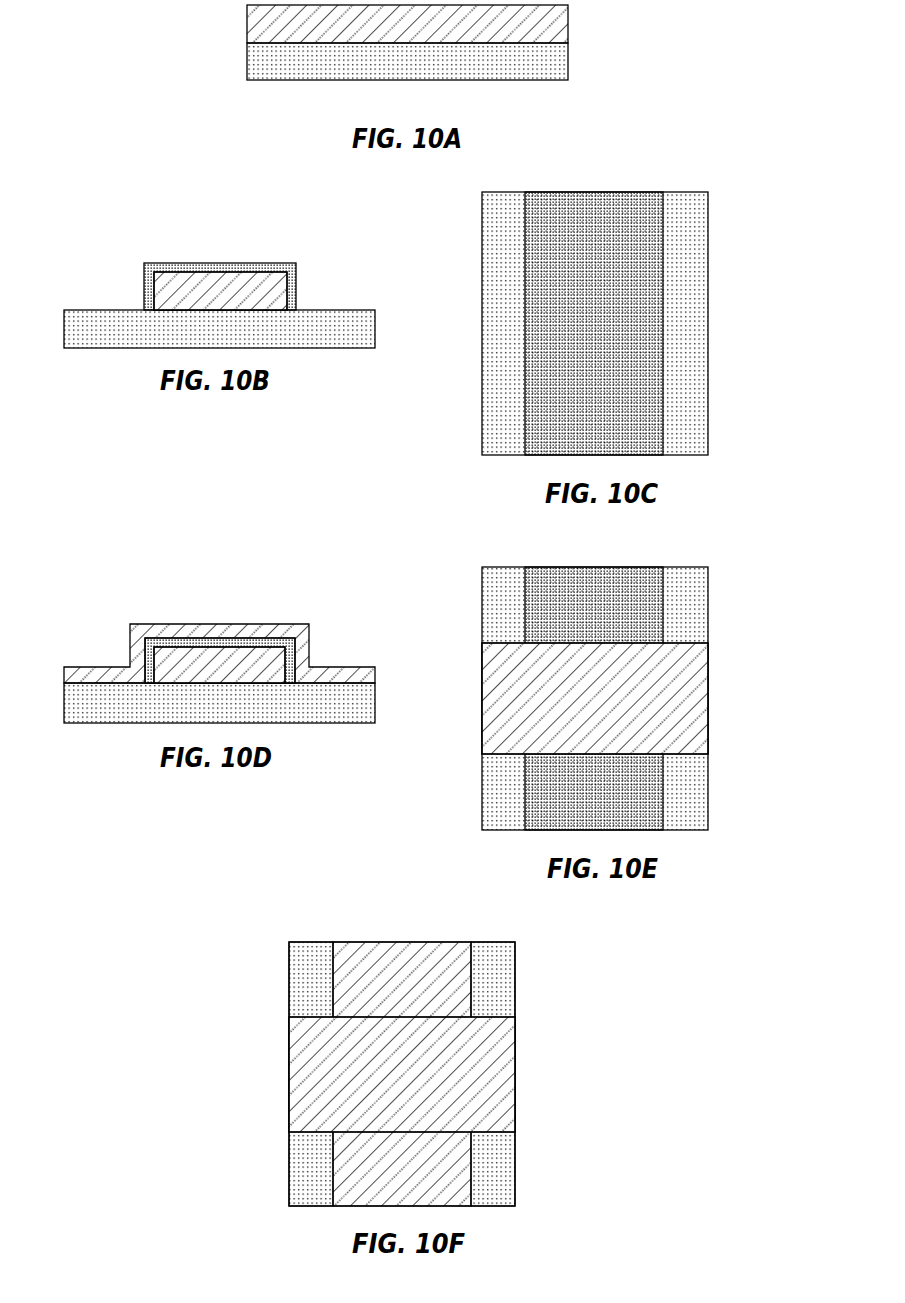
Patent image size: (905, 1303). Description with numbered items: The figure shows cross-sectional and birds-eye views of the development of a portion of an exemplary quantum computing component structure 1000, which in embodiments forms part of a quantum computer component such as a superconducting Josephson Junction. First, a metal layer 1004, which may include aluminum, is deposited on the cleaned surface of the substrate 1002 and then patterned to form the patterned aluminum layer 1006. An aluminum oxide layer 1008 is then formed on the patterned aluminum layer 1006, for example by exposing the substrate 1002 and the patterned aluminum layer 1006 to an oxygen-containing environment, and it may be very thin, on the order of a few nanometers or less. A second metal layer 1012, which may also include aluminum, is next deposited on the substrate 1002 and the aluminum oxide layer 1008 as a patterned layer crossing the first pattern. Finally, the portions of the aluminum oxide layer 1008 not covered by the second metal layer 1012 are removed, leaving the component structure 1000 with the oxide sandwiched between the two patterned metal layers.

In FIG. 10F, the quantum computing component structure 1000 is at (328, 902).
In FIG. 10A, the substrate 1002 is at (568, 62).
In FIG. 10B, the substrate 1002 is at (337, 310).
In FIG. 10C, the substrate 1002 is at (692, 310).
In FIG. 10D, the substrate 1002 is at (219, 703).
In FIG. 10E, the substrate 1002 is at (595, 698).
In FIG. 10F, the substrate 1002 is at (505, 985).
In FIG. 10A, the metal layer 1004 is at (568, 24).
In FIG. 10B, the patterned aluminum layer 1006 is at (280, 263).
In FIG. 10D, the patterned aluminum layer 1006 is at (219, 665).
In FIG. 10F, the patterned aluminum layer 1006 is at (393, 952).
In FIG. 10B, the aluminum oxide layer 1008 is at (203, 263).
In FIG. 10C, the aluminum oxide layer 1008 is at (598, 208).
In FIG. 10D, the aluminum oxide layer 1008 is at (220, 660).
In FIG. 10E, the aluminum oxide layer 1008 is at (594, 698).
In FIG. 10D, the second metal layer 1012 is at (223, 624).
In FIG. 10E, the second metal layer 1012 is at (692, 711).
In FIG. 10F, the second metal layer 1012 is at (505, 1080).